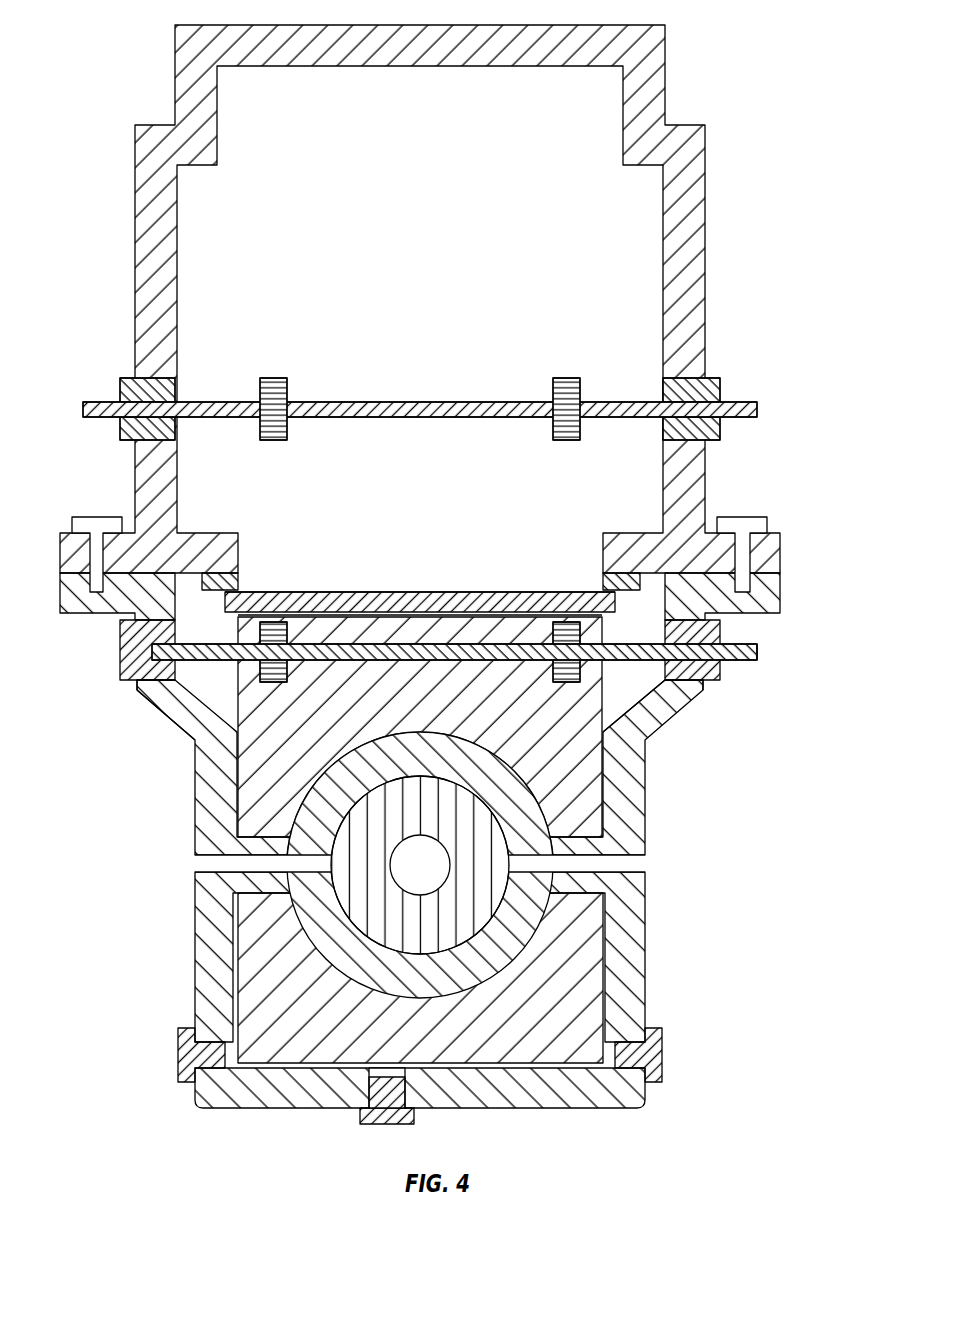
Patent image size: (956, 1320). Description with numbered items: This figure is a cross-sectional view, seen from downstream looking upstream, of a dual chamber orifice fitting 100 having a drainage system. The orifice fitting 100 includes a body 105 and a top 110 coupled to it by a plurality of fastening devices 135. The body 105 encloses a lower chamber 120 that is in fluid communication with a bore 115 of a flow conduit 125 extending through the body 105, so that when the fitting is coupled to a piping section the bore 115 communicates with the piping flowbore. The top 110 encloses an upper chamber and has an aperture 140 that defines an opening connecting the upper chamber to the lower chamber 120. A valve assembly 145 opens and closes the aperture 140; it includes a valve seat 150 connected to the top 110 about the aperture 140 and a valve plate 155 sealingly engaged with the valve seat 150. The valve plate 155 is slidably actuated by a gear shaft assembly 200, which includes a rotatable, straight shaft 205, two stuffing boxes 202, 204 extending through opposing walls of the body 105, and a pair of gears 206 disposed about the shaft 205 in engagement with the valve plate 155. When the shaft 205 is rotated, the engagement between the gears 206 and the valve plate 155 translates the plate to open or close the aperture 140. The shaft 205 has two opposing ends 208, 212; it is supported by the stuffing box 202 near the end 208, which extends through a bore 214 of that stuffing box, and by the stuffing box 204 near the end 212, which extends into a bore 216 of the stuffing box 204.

The orifice fitting 100 is at (448, 568).
The body 105 is at (645, 825).
The top 110 is at (705, 262).
The bore 115 is at (490, 873).
The lower chamber 120 is at (228, 700).
The flow conduit 125 is at (520, 930).
The fastening devices 135 is at (97, 517).
The aperture 140 is at (270, 560).
The valve assembly 145 is at (482, 570).
The valve seat 150 is at (682, 705).
The valve plate 155 is at (362, 600).
The gear shaft assembly 200 is at (566, 718).
The stuffing box 202 is at (720, 650).
The stuffing box 204 is at (118, 640).
The shaft 205 is at (453, 644).
The gears 206 is at (278, 622).
The end 208 is at (757, 650).
The end 212 is at (200, 665).
The bore 214 is at (718, 690).
The bore 216 is at (135, 683).